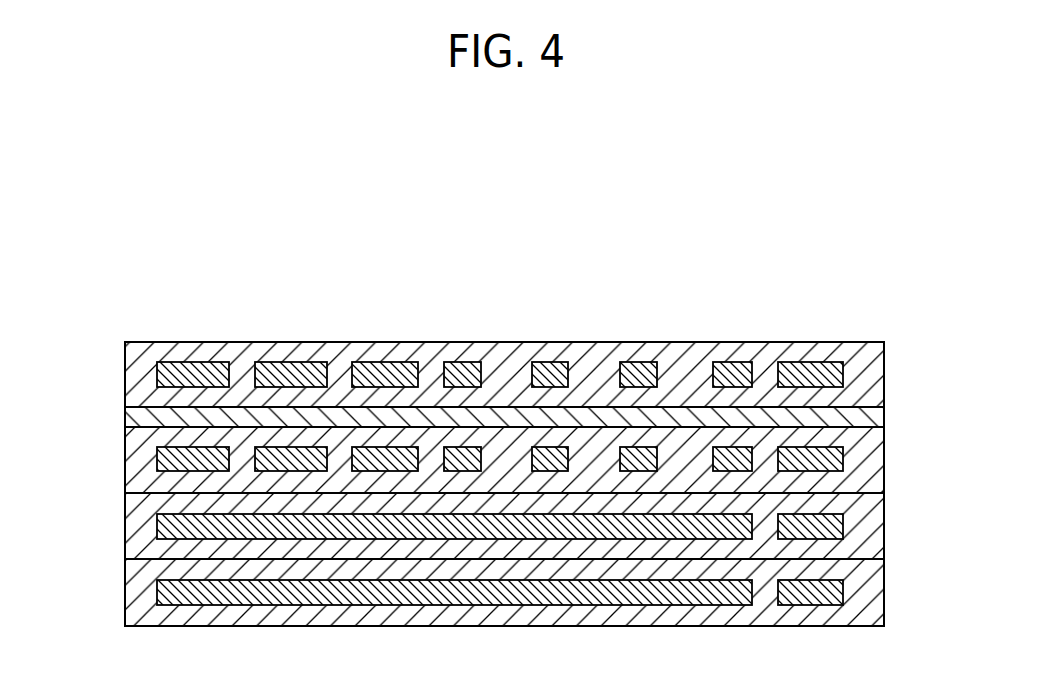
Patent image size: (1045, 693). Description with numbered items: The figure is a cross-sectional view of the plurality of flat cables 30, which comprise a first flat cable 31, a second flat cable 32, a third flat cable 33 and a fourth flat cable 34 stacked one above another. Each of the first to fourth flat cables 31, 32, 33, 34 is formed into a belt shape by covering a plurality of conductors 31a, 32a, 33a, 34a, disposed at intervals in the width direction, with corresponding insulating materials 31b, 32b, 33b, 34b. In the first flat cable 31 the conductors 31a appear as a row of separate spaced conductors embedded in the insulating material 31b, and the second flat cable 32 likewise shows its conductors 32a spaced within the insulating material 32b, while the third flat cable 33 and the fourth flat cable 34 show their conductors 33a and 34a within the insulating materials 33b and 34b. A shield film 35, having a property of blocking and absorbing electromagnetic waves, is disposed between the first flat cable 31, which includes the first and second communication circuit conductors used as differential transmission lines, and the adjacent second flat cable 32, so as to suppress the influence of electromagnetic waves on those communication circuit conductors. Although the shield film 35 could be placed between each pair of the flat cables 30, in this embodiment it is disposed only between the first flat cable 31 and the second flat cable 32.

The flat cables 30 is at (789, 213).
The first flat cable 31 is at (490, 384).
The conductors 31a is at (157, 364).
The insulating material 31b is at (125, 393).
The second flat cable 32 is at (490, 460).
The conductors 32a is at (157, 448).
The insulating material 32b is at (125, 473).
The third flat cable 33 is at (490, 526).
The conductors 33a is at (157, 516).
The insulating material 33b is at (125, 543).
The fourth flat cable 34 is at (490, 592).
The conductors 34a is at (157, 582).
The insulating material 34b is at (125, 607).
The shield film 35 is at (125, 417).